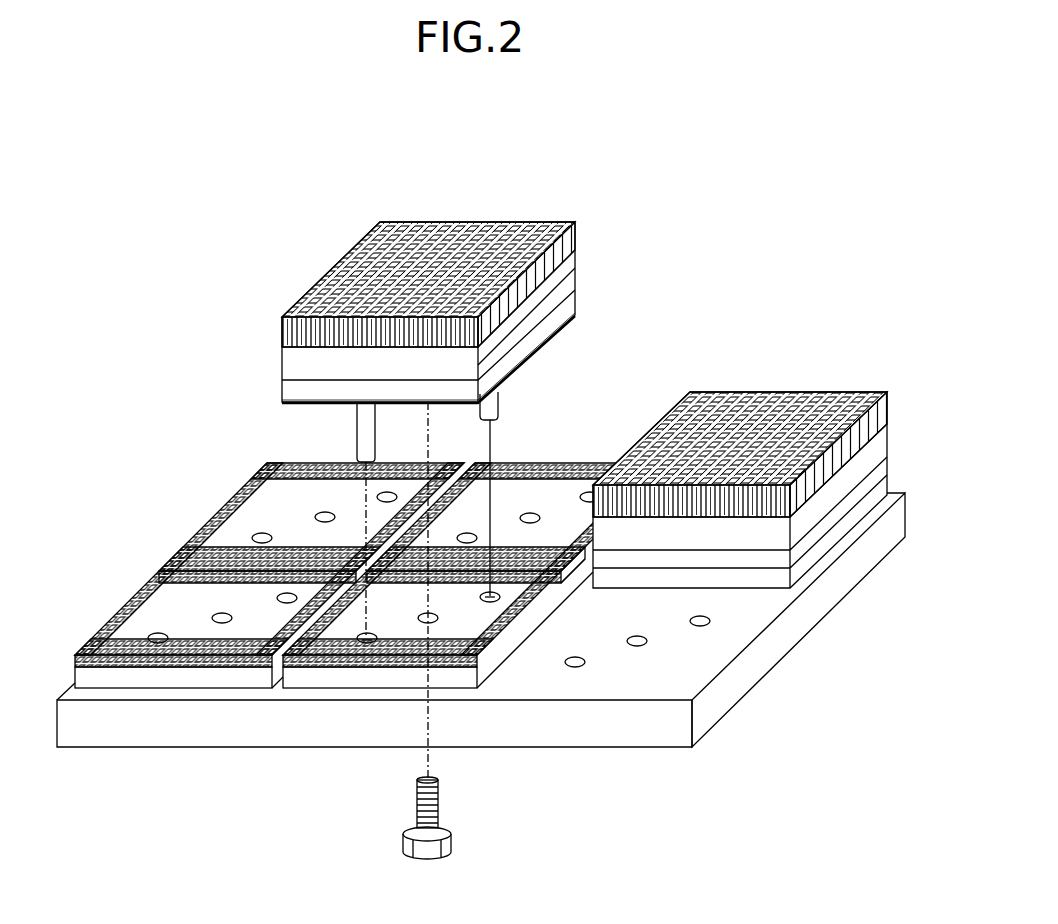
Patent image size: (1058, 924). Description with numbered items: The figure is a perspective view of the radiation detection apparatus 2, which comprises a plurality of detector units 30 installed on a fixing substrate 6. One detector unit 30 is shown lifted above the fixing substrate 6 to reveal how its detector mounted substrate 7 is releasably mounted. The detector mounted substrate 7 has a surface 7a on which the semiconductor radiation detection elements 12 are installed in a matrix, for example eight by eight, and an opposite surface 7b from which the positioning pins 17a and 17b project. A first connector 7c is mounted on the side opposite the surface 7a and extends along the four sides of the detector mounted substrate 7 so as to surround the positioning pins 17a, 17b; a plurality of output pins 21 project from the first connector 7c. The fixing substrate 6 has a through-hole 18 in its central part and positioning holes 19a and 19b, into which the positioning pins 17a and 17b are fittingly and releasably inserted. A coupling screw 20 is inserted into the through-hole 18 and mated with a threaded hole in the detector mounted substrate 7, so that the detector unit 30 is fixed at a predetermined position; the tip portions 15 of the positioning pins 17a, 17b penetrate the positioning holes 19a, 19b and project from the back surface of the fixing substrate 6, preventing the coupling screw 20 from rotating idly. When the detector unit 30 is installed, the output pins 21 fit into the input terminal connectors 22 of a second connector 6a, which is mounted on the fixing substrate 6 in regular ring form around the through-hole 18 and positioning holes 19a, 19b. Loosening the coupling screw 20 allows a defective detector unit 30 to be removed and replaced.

The radiation detection apparatus 2 is at (870, 447).
The fixing substrate 6 is at (755, 683).
The second connector 6a is at (513, 647).
The detector mounted substrate 7 is at (504, 287).
The surface 7a is at (575, 248).
The surface 7b is at (578, 300).
The first connector 7c is at (557, 312).
The semiconductor radiation detection elements 12 is at (818, 388).
The tip portions 15 is at (357, 467).
The positioning pin 17a is at (365, 423).
The positioning pin 17b is at (495, 393).
The through-hole 18 is at (481, 657).
The positioning hole 19a is at (365, 642).
The positioning hole 19b is at (490, 597).
The coupling screw 20 is at (447, 833).
The output pins 21 is at (543, 337).
The input terminal connectors 22 is at (565, 583).
The detector unit 30 is at (490, 287).